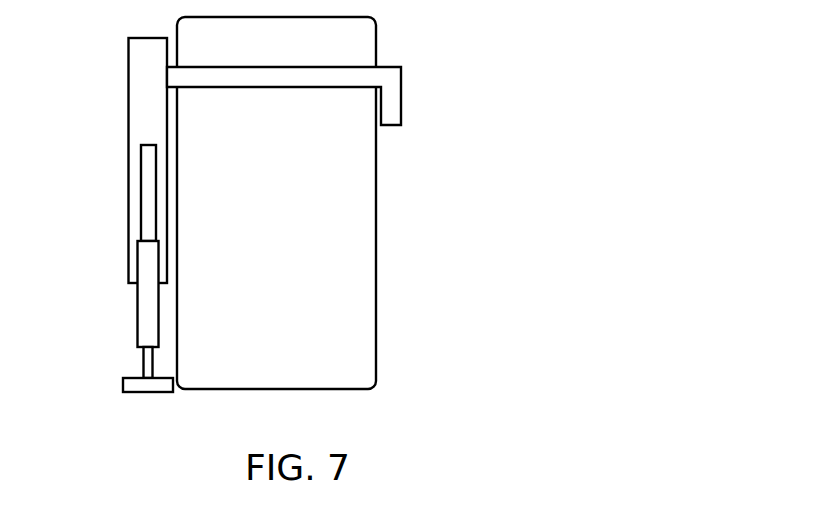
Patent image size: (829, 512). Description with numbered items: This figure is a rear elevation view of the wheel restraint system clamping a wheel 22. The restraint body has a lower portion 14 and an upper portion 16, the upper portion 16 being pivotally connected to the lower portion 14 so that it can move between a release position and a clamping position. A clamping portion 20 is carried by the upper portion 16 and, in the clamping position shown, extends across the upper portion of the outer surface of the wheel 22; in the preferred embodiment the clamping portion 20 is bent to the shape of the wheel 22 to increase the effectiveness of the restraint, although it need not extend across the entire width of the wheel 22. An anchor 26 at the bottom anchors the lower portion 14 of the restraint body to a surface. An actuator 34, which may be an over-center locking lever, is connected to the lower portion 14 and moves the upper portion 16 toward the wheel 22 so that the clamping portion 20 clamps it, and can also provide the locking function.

The lower portion 14 is at (138, 358).
The upper portion 16 is at (128, 117).
The clamping portion 20 is at (388, 90).
The wheel 22 is at (368, 208).
The anchor 26 is at (123, 381).
The actuator 34 is at (138, 300).